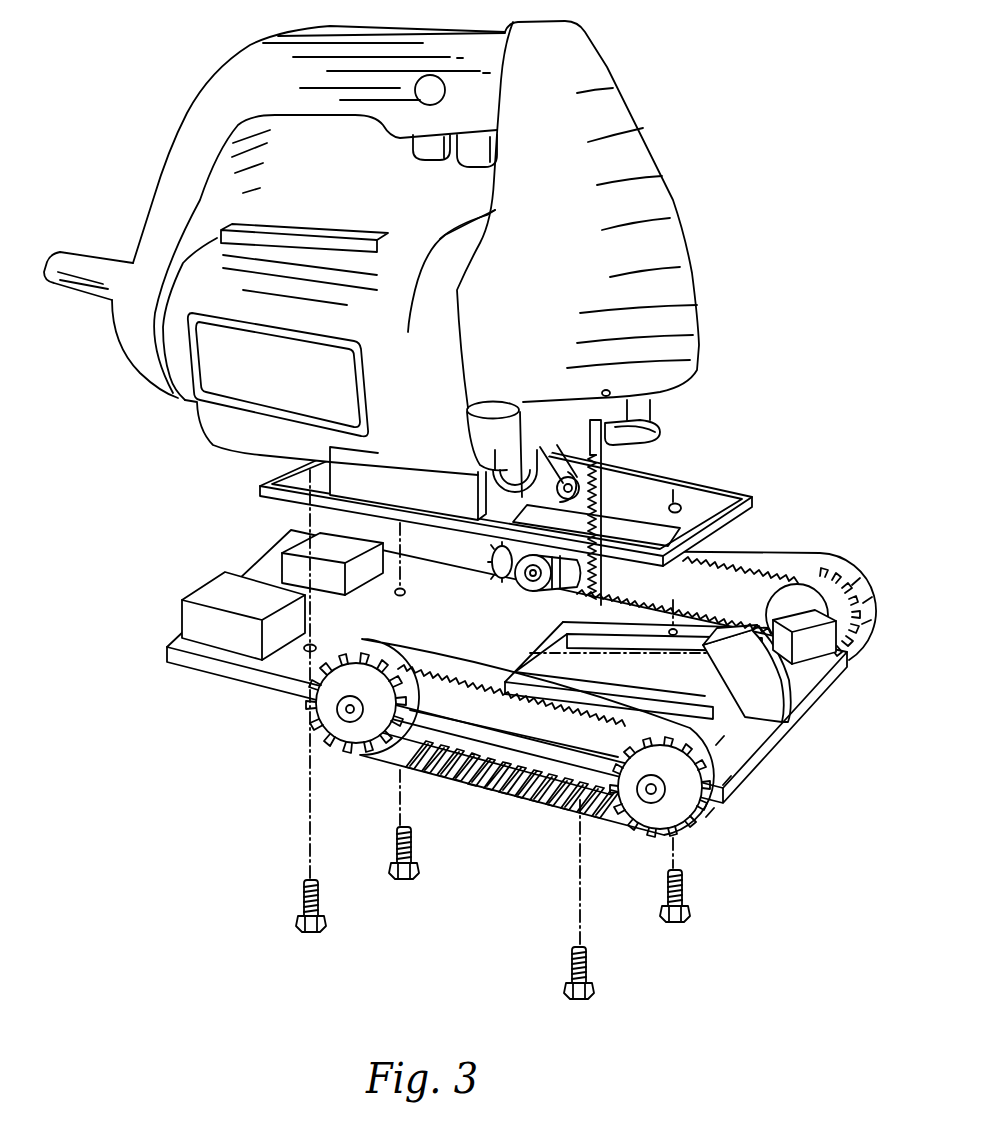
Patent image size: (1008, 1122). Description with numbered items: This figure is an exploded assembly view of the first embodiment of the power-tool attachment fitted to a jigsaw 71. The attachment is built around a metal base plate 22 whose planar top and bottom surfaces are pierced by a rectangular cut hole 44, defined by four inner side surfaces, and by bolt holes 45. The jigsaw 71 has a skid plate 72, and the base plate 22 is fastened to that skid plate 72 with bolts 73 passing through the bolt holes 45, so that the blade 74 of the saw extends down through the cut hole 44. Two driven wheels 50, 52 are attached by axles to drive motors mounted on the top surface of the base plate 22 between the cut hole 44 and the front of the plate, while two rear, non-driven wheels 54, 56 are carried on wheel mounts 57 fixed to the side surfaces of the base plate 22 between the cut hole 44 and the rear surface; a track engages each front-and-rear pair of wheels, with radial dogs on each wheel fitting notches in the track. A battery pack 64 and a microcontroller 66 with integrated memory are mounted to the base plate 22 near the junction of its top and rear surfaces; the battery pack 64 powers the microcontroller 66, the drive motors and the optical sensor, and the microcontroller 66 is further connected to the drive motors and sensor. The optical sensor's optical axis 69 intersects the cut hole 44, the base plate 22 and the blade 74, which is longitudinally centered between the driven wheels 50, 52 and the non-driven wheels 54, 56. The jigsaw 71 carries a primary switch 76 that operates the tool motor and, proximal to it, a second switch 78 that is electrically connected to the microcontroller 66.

The base plate 22 is at (750, 728).
The cut hole 44 is at (652, 703).
The bolt holes 45 is at (407, 598).
The driven wheel 50 is at (673, 813).
The driven wheel 52 is at (783, 607).
The non-driven wheel 54 is at (365, 733).
The non-driven wheel 56 is at (495, 566).
The wheel mounts 57 is at (527, 587).
The battery pack 64 is at (207, 592).
The microcontroller 66 is at (298, 540).
The optical axis 69 is at (593, 653).
The jigsaw 71 is at (655, 160).
The skid plate 72 is at (717, 490).
The bolts 73 is at (318, 915).
The blade 74 is at (603, 468).
The primary switch 76 is at (477, 165).
The second switch 78 is at (423, 155).